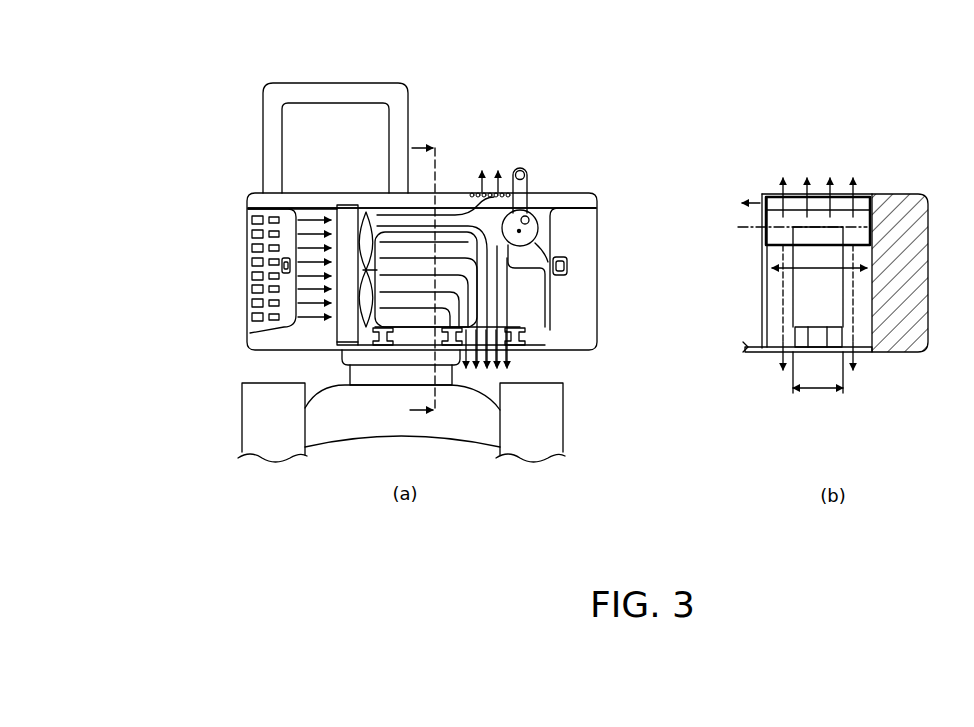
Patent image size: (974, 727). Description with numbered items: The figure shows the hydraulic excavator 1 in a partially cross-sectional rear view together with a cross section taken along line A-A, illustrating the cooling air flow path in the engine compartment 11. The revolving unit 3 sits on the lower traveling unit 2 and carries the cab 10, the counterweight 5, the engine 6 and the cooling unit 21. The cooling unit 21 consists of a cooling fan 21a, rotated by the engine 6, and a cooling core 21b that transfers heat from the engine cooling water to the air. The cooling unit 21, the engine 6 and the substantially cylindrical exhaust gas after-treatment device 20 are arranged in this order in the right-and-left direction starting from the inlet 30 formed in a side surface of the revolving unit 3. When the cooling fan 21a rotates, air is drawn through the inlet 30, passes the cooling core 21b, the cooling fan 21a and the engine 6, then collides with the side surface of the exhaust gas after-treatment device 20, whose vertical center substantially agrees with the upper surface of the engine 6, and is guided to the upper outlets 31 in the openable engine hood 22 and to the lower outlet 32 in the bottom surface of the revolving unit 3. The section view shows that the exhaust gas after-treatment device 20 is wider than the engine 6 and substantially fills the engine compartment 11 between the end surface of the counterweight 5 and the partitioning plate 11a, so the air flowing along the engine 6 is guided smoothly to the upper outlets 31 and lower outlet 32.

The hydraulic excavator 1 is at (547, 87).
The lower traveling unit 2 is at (240, 417).
The revolving unit 3 is at (260, 340).
The counterweight 5 is at (918, 200).
The engine 6 is at (455, 247).
The cab 10 is at (284, 75).
The engine compartment 11 is at (550, 213).
The partitioning plate 11a is at (765, 217).
The exhaust gas after-treatment device 20 is at (533, 213).
The cooling unit 21 is at (188, 162).
The cooling fan 21a is at (357, 208).
The cooling core 21b is at (337, 205).
The engine hood 22 is at (515, 167).
The inlet 30 is at (252, 220).
The upper outlets 31 is at (495, 190).
The lower outlet 32 is at (513, 365).